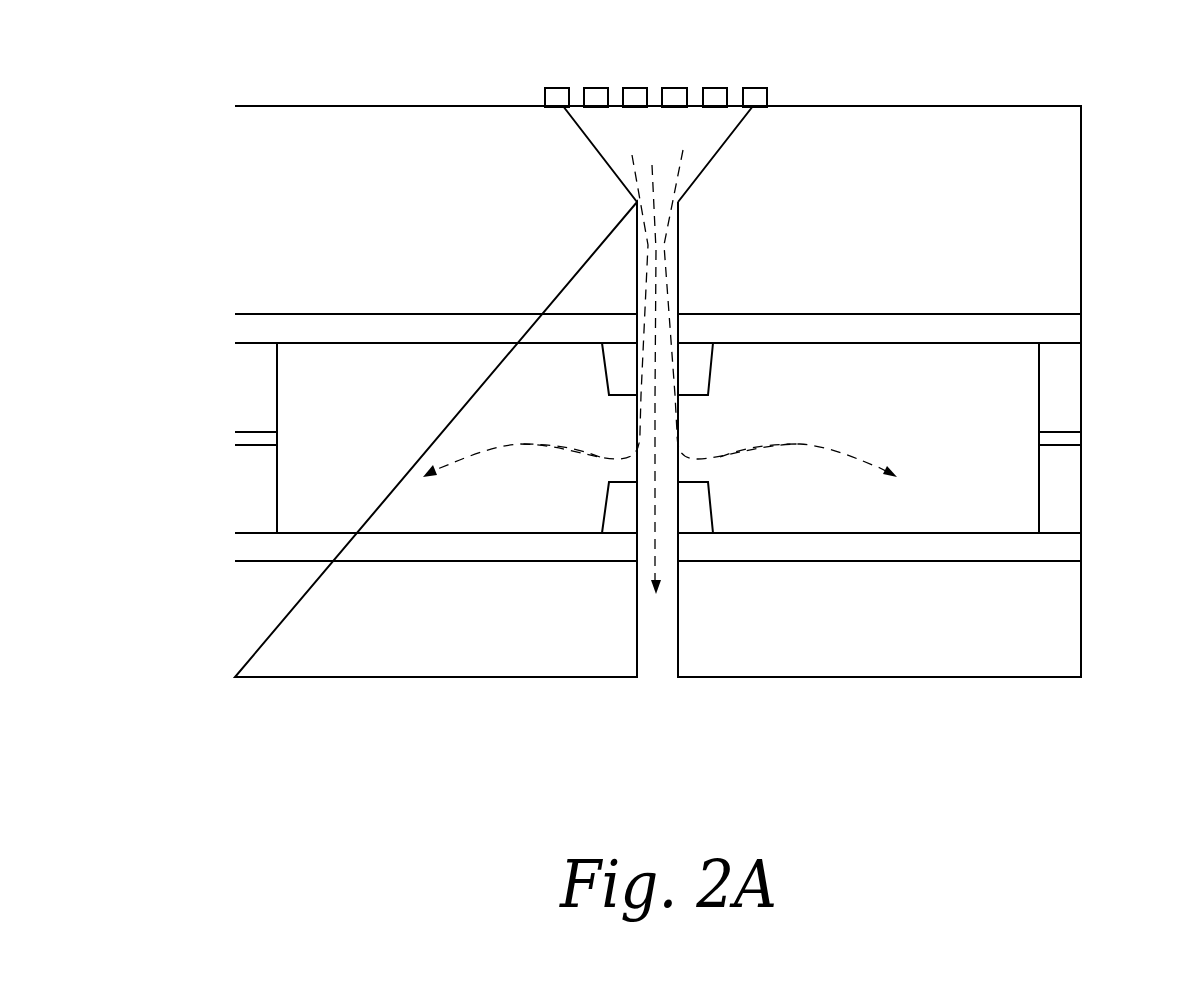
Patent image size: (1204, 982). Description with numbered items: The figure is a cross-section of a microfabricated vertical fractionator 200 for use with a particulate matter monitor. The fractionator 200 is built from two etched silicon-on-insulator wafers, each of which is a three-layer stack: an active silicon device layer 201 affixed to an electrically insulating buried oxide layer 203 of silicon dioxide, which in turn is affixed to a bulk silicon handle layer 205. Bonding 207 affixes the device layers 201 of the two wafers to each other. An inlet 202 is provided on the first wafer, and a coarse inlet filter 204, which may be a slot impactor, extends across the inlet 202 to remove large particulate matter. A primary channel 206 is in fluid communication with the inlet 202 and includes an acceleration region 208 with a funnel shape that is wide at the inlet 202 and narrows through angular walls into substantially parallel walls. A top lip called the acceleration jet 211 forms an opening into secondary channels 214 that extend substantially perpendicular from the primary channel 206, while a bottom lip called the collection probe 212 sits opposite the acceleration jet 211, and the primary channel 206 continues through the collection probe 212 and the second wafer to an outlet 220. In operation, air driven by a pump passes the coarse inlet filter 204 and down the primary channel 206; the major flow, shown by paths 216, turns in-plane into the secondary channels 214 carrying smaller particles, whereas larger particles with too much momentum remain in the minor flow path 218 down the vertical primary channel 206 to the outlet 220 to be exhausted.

The fractionator 200 is at (435, 745).
The device layer 201 is at (1073, 381).
The inlet 202 is at (739, 82).
The buried oxide layer 203 is at (1073, 325).
The coarse inlet filter 204 is at (635, 88).
The handle layer 205 is at (1073, 190).
The primary channel 206 is at (663, 207).
The bonding 207 is at (1073, 437).
The acceleration region 208 is at (607, 141).
The acceleration jet 211 is at (604, 370).
The collection probe 212 is at (607, 492).
The secondary channels 214 is at (659, 482).
The major flow paths 216 is at (455, 462).
The minor flow path 218 is at (655, 470).
The outlet 220 is at (654, 690).